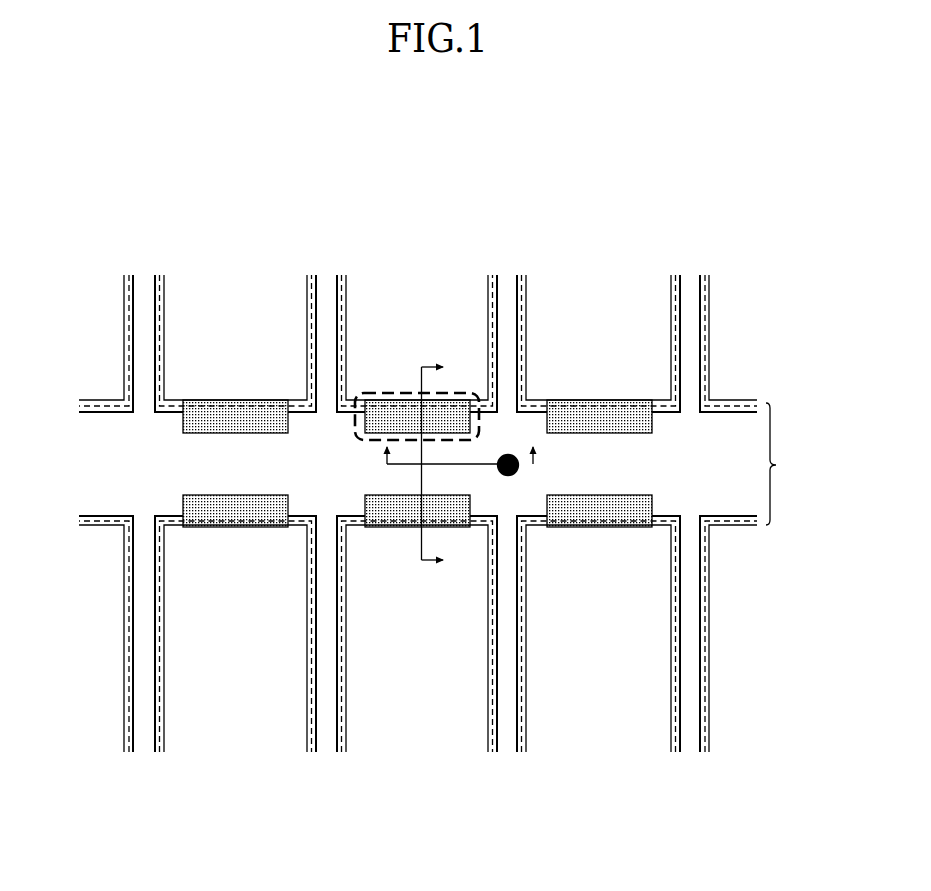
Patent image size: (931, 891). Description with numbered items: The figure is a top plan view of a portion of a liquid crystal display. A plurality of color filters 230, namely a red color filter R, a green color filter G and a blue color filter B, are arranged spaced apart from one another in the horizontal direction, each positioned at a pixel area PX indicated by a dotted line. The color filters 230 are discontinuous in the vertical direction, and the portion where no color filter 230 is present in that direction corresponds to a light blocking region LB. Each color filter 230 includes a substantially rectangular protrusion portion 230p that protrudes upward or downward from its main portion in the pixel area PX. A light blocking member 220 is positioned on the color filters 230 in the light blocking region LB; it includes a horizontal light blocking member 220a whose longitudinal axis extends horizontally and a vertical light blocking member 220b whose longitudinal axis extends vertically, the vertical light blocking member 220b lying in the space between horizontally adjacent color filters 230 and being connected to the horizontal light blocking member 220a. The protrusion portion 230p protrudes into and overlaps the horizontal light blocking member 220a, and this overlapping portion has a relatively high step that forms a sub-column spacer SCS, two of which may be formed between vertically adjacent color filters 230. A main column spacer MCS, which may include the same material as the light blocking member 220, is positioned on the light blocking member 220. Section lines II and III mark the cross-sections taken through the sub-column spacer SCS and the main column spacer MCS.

The light blocking member 220 is at (465, 170).
The horizontal light blocking member 220a is at (568, 402).
The vertical light blocking member 220b is at (572, 284).
The color filter 230 is at (337, 623).
The protrusion portion 230p is at (374, 423).
The pixel area PX is at (160, 320).
The sub-column spacer SCS is at (391, 393).
The main column spacer MCS is at (517, 471).
The light blocking region LB is at (784, 464).
The section line II is at (442, 464).
The section line III is at (461, 455).
The red color filter R is at (235, 638).
The green color filter G is at (417, 638).
The blue color filter B is at (598, 638).